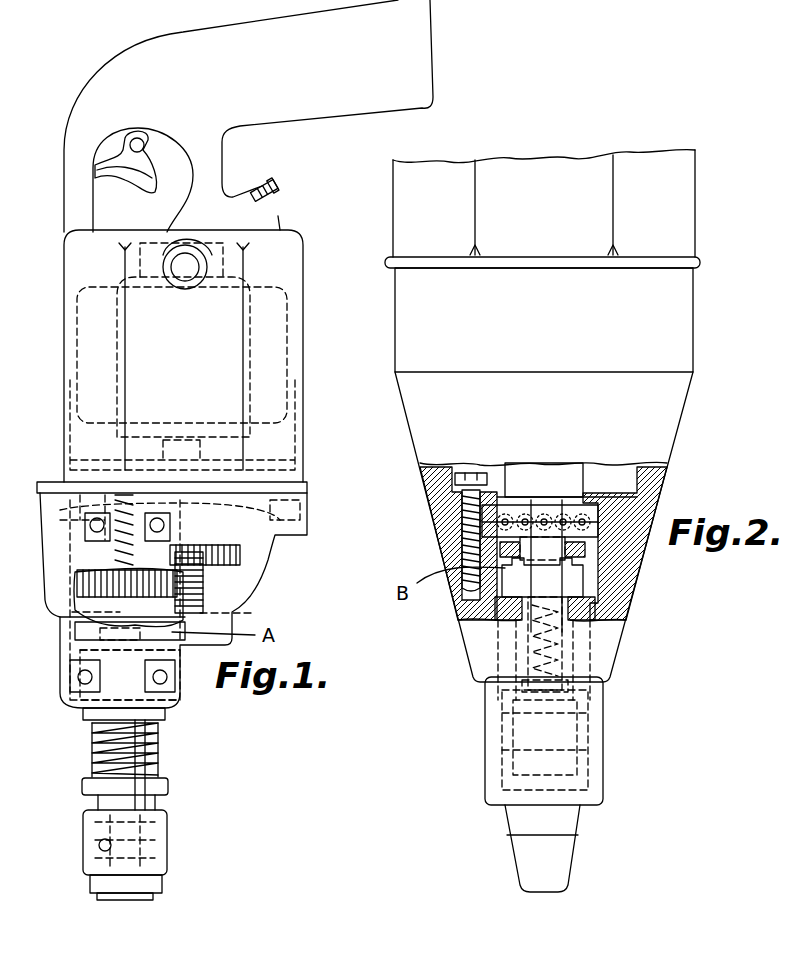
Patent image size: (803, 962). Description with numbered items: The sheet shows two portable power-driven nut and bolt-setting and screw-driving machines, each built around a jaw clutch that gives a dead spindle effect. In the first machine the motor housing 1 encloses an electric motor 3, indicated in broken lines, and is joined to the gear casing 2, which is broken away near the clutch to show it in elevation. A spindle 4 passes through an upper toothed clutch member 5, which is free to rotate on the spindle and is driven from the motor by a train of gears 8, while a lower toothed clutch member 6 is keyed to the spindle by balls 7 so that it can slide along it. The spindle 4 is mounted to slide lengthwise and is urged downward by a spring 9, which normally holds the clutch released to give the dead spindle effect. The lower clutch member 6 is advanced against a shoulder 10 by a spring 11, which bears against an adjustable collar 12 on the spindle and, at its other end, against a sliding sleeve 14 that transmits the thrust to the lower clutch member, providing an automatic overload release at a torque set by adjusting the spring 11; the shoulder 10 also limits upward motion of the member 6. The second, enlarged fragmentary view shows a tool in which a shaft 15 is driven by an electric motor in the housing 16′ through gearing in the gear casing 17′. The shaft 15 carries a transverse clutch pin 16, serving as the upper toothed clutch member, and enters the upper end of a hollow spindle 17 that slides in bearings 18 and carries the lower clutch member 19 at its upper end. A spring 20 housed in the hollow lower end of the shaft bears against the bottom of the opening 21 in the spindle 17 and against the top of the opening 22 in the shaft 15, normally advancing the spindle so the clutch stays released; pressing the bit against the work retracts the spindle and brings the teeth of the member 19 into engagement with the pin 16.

In FIG. 1, the motor housing 1 is at (300, 284).
In FIG. 1, the gear casing 2 is at (272, 540).
In FIG. 1, the electric motor 3 is at (245, 355).
In FIG. 1, the spindle 4 is at (90, 724).
In FIG. 1, the upper toothed clutch member 5 is at (72, 585).
In FIG. 1, the lower toothed clutch member 6 is at (80, 640).
In FIG. 1, the balls 7 is at (85, 656).
In FIG. 1, the train of gears 8 is at (240, 573).
In FIG. 1, the spring 9 is at (42, 513).
In FIG. 1, the shoulder 10 is at (140, 595).
In FIG. 1, the spring 11 is at (150, 736).
In FIG. 2, the spring 11 is at (440, 540).
In FIG. 1, the adjustable collar 12 is at (168, 793).
In FIG. 1, the sliding sleeve 14 is at (70, 695).
In FIG. 2, the shaft 15 is at (522, 518).
In FIG. 2, the clutch pin 16 is at (605, 560).
In FIG. 2, the housing 16′ is at (683, 198).
In FIG. 2, the hollow spindle 17 is at (592, 650).
In FIG. 2, the gear casing 17′ is at (688, 330).
In FIG. 2, the bearings 18 is at (582, 667).
In FIG. 2, the lower clutch member 19 is at (513, 588).
In FIG. 2, the spring 20 is at (530, 618).
In FIG. 2, the opening 21 is at (505, 688).
In FIG. 2, the opening 22 is at (530, 635).